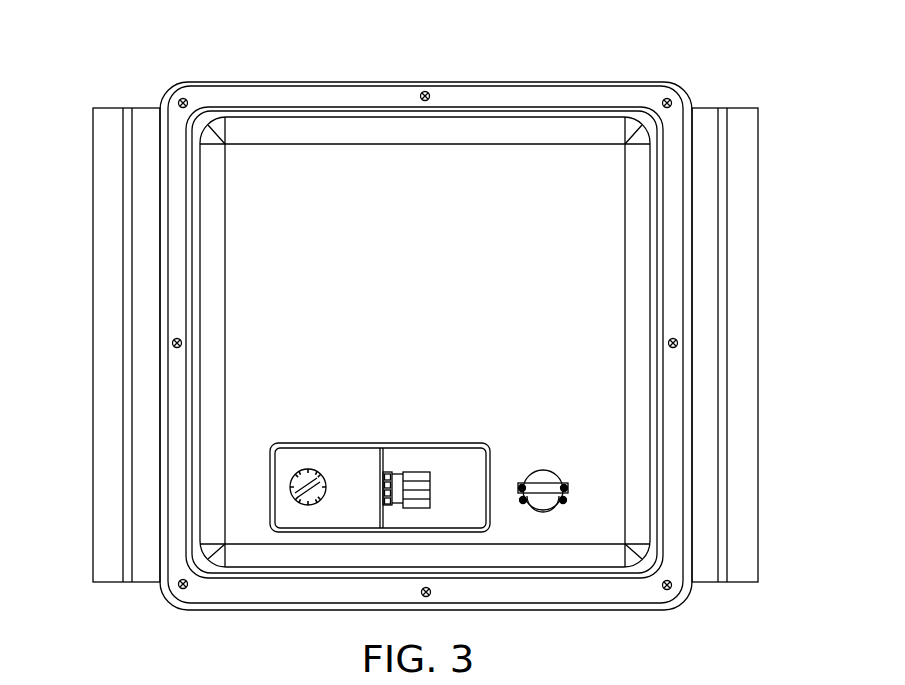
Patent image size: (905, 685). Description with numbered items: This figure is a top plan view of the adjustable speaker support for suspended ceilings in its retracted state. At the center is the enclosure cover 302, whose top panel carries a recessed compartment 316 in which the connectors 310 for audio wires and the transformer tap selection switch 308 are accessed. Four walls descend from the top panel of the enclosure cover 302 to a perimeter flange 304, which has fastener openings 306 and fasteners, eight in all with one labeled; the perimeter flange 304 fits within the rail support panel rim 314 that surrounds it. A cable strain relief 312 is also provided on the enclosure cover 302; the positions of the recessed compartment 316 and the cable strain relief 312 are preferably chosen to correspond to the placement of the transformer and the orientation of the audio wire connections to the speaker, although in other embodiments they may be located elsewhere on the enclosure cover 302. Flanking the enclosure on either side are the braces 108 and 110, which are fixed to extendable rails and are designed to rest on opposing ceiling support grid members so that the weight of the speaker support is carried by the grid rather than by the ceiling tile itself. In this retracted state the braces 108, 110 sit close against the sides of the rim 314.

The brace 108 is at (737, 108).
The brace 110 is at (106, 108).
The enclosure cover 302 is at (503, 164).
The perimeter flange 304 is at (342, 97).
The fastener openings 306 is at (667, 99).
The transformer tap selection switch 308 is at (297, 478).
The connectors 310 is at (400, 480).
The cable strain relief 312 is at (548, 470).
The rail support panel rim 314 is at (490, 80).
The recessed compartment 316 is at (455, 445).